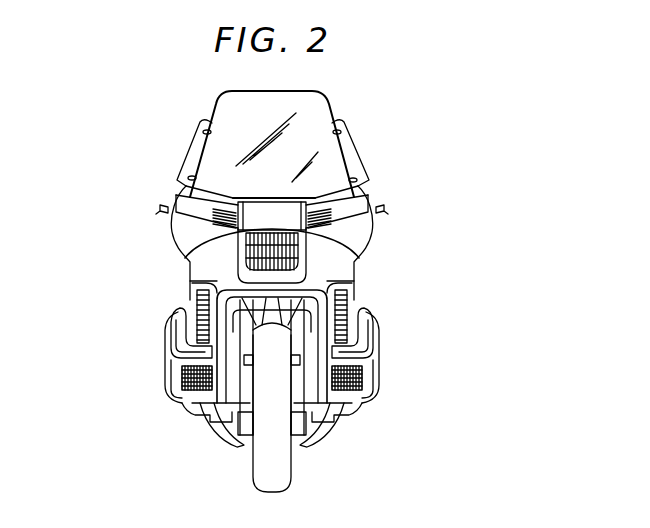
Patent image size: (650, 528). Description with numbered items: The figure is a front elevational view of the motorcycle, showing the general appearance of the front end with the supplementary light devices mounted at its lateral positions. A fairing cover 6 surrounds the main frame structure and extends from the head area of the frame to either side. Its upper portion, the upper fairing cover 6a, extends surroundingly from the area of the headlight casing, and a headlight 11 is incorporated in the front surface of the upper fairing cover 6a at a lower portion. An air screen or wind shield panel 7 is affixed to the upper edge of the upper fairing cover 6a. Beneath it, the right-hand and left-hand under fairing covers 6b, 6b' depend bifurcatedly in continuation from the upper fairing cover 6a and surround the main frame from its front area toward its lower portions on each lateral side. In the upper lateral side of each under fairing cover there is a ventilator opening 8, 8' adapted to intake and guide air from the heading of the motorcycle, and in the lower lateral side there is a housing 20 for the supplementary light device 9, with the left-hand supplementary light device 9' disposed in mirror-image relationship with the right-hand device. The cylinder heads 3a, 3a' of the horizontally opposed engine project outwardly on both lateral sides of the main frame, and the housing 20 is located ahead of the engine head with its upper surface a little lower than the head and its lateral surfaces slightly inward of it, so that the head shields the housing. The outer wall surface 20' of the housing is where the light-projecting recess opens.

The wind shield panel 7 is at (213, 157).
The headlight 11 is at (178, 246).
The fairing cover 6 is at (358, 268).
The upper fairing cover 6a is at (360, 236).
The ventilator opening 8 is at (141, 314).
The ventilator opening 8' is at (407, 314).
The right-hand under fairing cover 6b is at (143, 333).
The left-hand under fairing cover 6b' is at (414, 333).
The cylinder head 3a is at (128, 357).
The cylinder head 3a' is at (429, 357).
The supplementary light device 9 is at (143, 393).
The left-hand supplementary light device 9' is at (407, 392).
The housing 20 is at (152, 424).
The outer wall surface 20' is at (386, 425).